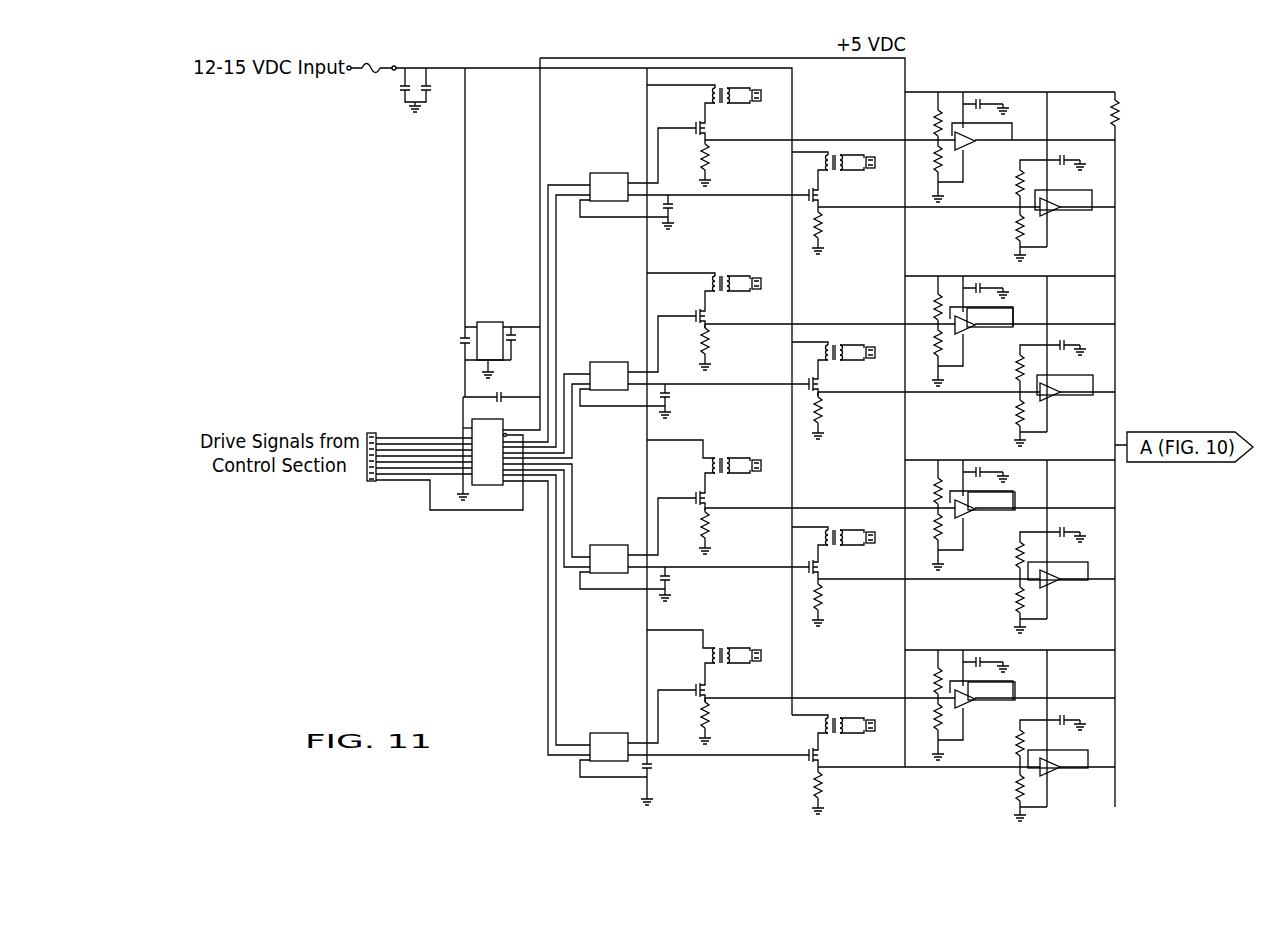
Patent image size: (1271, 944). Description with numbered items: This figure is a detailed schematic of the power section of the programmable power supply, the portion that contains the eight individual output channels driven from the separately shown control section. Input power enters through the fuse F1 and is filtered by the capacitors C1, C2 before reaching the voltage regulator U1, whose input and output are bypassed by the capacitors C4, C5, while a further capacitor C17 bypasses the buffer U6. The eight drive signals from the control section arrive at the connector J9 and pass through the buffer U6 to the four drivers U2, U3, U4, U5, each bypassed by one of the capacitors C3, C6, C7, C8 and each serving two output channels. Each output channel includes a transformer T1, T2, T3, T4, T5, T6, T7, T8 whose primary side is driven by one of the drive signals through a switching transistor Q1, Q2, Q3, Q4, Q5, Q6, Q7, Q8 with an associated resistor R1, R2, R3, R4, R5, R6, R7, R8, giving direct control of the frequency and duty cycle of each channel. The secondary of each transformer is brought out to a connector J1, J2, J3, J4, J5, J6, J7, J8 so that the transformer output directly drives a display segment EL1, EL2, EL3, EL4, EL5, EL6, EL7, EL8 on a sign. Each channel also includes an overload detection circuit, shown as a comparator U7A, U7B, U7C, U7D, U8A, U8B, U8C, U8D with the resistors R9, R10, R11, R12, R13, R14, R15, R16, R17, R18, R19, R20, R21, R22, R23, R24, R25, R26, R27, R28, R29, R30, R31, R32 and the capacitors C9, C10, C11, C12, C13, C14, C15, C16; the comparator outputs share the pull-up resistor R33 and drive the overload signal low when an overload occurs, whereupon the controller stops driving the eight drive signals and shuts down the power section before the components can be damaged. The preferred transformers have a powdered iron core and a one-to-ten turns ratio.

The fuse 2A F1 is at (378, 54).
The input filter capacitor 680 uF C1 is at (377, 94).
The input filter capacitor 680 uF C2 is at (452, 94).
The 7805 voltage regulator U1 is at (493, 319).
The regulator input capacitor .33 uF C4 is at (434, 345).
The regulator output capacitor .1 uF C5 is at (518, 358).
The bypass capacitor .1 uF C17 is at (496, 389).
The drive signal input connector J9 is at (372, 445).
The 74HC541 buffer U6 is at (481, 442).
The TC427 MOSFET driver U2 is at (608, 175).
The TC427 MOSFET driver U3 is at (608, 364).
The TC427 MOSFET driver U4 is at (608, 547).
The TC427 MOSFET driver U5 is at (608, 735).
The driver bypass capacitor .1 uF C3 is at (690, 217).
The driver bypass capacitor .1 uF C6 is at (687, 406).
The driver bypass capacitor .1 uF C7 is at (687, 589).
The driver bypass capacitor .1 uF C8 is at (667, 780).
The transformer T1 is at (704, 91).
The transformer T2 is at (834, 149).
The transformer T3 is at (704, 277).
The transformer T4 is at (834, 347).
The transformer T5 is at (709, 460).
The transformer T6 is at (834, 532).
The transformer T7 is at (709, 651).
The transformer T8 is at (834, 720).
The output connector J1 is at (768, 96).
The output connector J2 is at (884, 166).
The output connector J3 is at (768, 280).
The output connector J4 is at (884, 351).
The output connector J5 is at (768, 464).
The output connector J6 is at (884, 538).
The output connector J7 is at (768, 653).
The output connector J8 is at (881, 728).
The electroluminescent lamp EL1 is at (769, 110).
The electroluminescent lamp EL2 is at (880, 176).
The electroluminescent lamp EL3 is at (769, 296).
The electroluminescent lamp EL4 is at (880, 363).
The electroluminescent lamp EL5 is at (769, 479).
The electroluminescent lamp EL6 is at (880, 549).
The electroluminescent lamp EL7 is at (769, 669).
The electroluminescent lamp EL8 is at (880, 739).
The switching MOSFET Q1 is at (712, 128).
The switching MOSFET Q2 is at (825, 193).
The switching MOSFET Q3 is at (712, 315).
The switching MOSFET Q4 is at (825, 380).
The switching MOSFET Q5 is at (712, 498).
The switching MOSFET Q6 is at (825, 565).
The switching MOSFET Q7 is at (712, 689).
The switching MOSFET Q8 is at (823, 753).
The current sense resistor .25 R1 is at (723, 165).
The current sense resistor .25 R2 is at (834, 230).
The current sense resistor .25 R3 is at (723, 349).
The current sense resistor .25 R4 is at (834, 415).
The current sense resistor .25 R5 is at (723, 533).
The current sense resistor .25 R6 is at (834, 602).
The current sense resistor .25 R7 is at (723, 723).
The current sense resistor .25 R8 is at (834, 790).
The resistor 10K R9 is at (923, 114).
The feedback resistor 100K R10 is at (1006, 134).
The resistor 1.2K R11 is at (938, 169).
The resistor 10K R12 is at (1025, 181).
The feedback resistor 100K R13 is at (1089, 189).
The resistor 1.2K R14 is at (1012, 228).
The resistor 10K R15 is at (919, 298).
The feedback resistor 100K R16 is at (1001, 306).
The resistor 1.2K R17 is at (938, 353).
The resistor 10K R18 is at (1008, 368).
The feedback resistor 100K R19 is at (1087, 374).
The resistor 1.2K R20 is at (1007, 413).
The resistor 10K R21 is at (921, 482).
The feedback resistor 100K R22 is at (1004, 491).
The resistor 1.2K R23 is at (938, 537).
The resistor 10K R24 is at (1011, 553).
The feedback resistor 100K R25 is at (1081, 560).
The resistor 1.2K R26 is at (1011, 600).
The resistor 10K R27 is at (921, 672).
The feedback resistor 100K R28 is at (1004, 681).
The resistor 1.2K R29 is at (931, 727).
The resistor 10K R30 is at (1011, 741).
The feedback resistor 100K R31 is at (1081, 748).
The resistor 1.2K R32 is at (1011, 788).
The pull-up resistor 3.3K R33 is at (1135, 110).
The filter capacitor .1 uF C9 is at (1000, 93).
The filter capacitor .1 uF C10 is at (1100, 155).
The filter capacitor .1 uF C11 is at (1002, 277).
The filter capacitor .1 uF C12 is at (1092, 340).
The filter capacitor .1 uF C13 is at (1011, 461).
The filter capacitor .1 uF C14 is at (1090, 526).
The filter capacitor .1 uF C15 is at (1008, 651).
The filter capacitor .1 uF C16 is at (1090, 714).
The LM339 comparator U7A is at (982, 169).
The LM339 comparator U7B is at (1076, 211).
The LM339 comparator U7C is at (992, 326).
The LM339 comparator U7D is at (1076, 396).
The LM339 comparator U8A is at (993, 511).
The LM339 comparator U8B is at (1075, 583).
The LM339 comparator U8C is at (993, 701).
The LM339 comparator U8D is at (1075, 771).